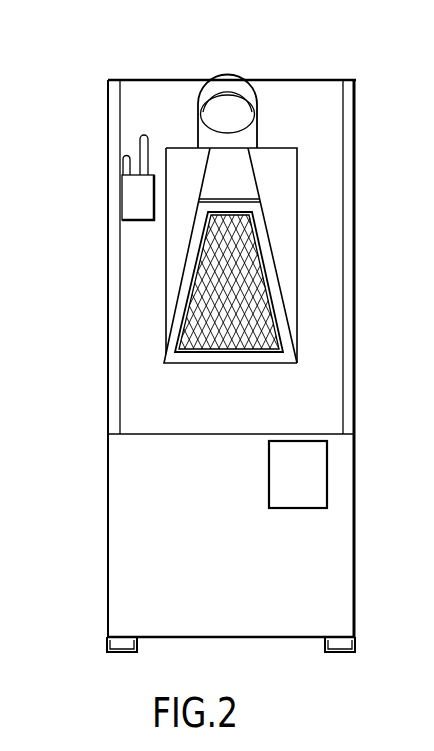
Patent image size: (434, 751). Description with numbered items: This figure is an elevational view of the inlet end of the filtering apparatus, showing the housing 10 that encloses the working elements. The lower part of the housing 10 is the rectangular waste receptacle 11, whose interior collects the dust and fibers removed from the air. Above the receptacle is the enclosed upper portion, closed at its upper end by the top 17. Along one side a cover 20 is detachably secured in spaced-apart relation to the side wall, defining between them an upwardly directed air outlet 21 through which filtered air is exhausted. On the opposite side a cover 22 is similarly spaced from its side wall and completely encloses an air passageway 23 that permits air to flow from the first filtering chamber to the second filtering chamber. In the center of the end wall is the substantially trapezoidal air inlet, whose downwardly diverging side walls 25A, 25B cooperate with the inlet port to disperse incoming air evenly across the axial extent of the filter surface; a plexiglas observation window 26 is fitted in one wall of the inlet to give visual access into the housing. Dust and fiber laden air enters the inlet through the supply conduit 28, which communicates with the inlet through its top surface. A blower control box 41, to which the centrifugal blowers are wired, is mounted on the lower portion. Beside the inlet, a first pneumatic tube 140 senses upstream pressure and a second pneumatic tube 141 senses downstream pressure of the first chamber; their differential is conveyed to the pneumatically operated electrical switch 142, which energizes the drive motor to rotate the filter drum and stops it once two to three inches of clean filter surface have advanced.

The housing 10 is at (210, 62).
The waste receptacle 11 is at (220, 585).
The top 17 is at (315, 80).
The cover 20 is at (108, 100).
The air outlet 21 is at (118, 80).
The cover 22 is at (355, 118).
The air passageway 23 is at (349, 222).
The side wall of air inlet 25A is at (173, 283).
The side wall of air inlet 25B is at (292, 268).
The plexiglas observation window 26 is at (243, 306).
The supply conduit 28 is at (234, 92).
The blower control box 41 is at (312, 490).
The first pneumatic tube 140 is at (140, 138).
The second pneumatic tube 141 is at (124, 165).
The pneumatically operated electrical switch 142 is at (130, 202).